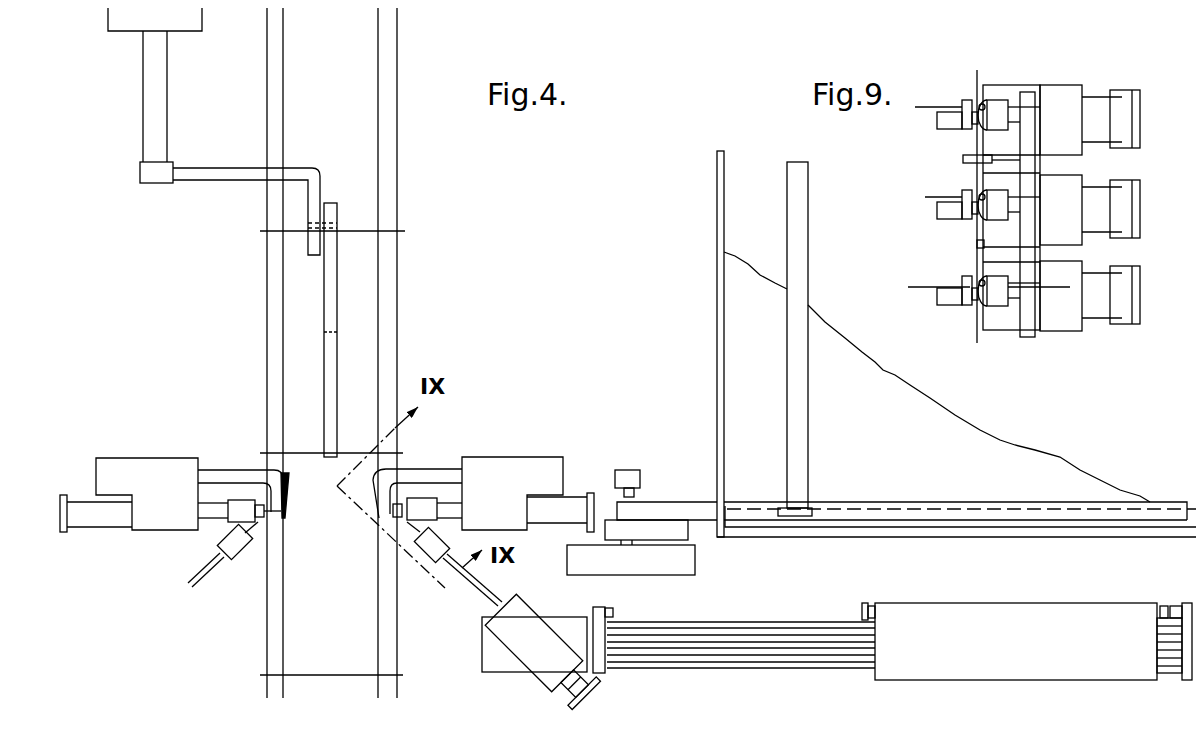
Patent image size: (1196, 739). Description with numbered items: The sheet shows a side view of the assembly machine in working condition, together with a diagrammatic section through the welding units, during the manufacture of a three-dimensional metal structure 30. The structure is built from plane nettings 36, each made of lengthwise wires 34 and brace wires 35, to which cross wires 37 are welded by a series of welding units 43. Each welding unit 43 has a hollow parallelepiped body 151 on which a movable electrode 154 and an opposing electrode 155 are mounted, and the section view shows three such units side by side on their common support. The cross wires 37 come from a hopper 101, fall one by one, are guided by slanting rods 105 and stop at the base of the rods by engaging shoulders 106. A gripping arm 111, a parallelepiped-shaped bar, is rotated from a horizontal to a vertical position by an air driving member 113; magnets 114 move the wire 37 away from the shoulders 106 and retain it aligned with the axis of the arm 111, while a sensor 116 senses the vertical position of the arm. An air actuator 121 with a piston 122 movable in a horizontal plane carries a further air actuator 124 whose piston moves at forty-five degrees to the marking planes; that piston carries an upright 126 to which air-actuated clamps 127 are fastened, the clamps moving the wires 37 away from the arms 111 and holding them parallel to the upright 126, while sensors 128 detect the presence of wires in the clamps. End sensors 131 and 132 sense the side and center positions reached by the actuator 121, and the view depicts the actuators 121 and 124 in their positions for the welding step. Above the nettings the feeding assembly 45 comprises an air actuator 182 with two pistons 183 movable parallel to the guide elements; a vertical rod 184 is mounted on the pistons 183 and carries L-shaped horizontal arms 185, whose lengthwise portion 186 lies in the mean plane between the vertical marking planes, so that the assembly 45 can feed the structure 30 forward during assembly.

In FIG. 4, the three-dimensional metal structure 30 is at (244, 634).
In FIG. 4, the lengthwise wires 34 is at (264, 344).
In FIG. 9, the lengthwise wires 34 is at (918, 290).
In FIG. 4, the brace wires 35 is at (353, 231).
In FIG. 4, the plane netting 36 is at (410, 139).
In FIG. 4, the cross wire 37 is at (391, 513).
In FIG. 9, the cross wire 37 is at (973, 83).
In FIG. 4, the welding unit 43 is at (146, 453).
In FIG. 4, the feeding assembly 45 is at (134, 153).
In FIG. 4, the hopper 101 is at (963, 425).
In FIG. 4, the slanting rod 105 is at (797, 413).
In FIG. 4, the shoulder 106 is at (831, 506).
In FIG. 4, the gripping arm 111 is at (648, 512).
In FIG. 4, the air driving member 113 is at (688, 569).
In FIG. 4, the magnet 114 is at (918, 502).
In FIG. 4, the sensor 116 is at (634, 476).
In FIG. 4, the air actuator 121 is at (957, 612).
In FIG. 4, the piston 122 is at (753, 642).
In FIG. 4, the air actuator 124 is at (515, 622).
In FIG. 9, the upright 126 is at (1024, 334).
In FIG. 4, the air-actuated clamp 127 is at (264, 523).
In FIG. 9, the air-actuated clamp 127 is at (963, 160).
In FIG. 9, the sensor 128 is at (977, 248).
In FIG. 4, the end sensor 131 is at (1163, 608).
In FIG. 4, the end sensor 132 is at (869, 607).
In FIG. 9, the body 151 is at (1077, 145).
In FIG. 4, the movable electrode 154 is at (453, 512).
In FIG. 9, the movable electrode 154 is at (1015, 115).
In FIG. 4, the opposing electrode 155 is at (390, 498).
In FIG. 9, the opposing electrode 155 is at (950, 127).
In FIG. 4, the air actuator 182 is at (193, 26).
In FIG. 4, the piston 183 is at (168, 133).
In FIG. 4, the vertical rod 184 is at (160, 180).
In FIG. 4, the L-shaped horizontal arm 185 is at (213, 173).
In FIG. 4, the lengthwise portion 186 is at (319, 196).